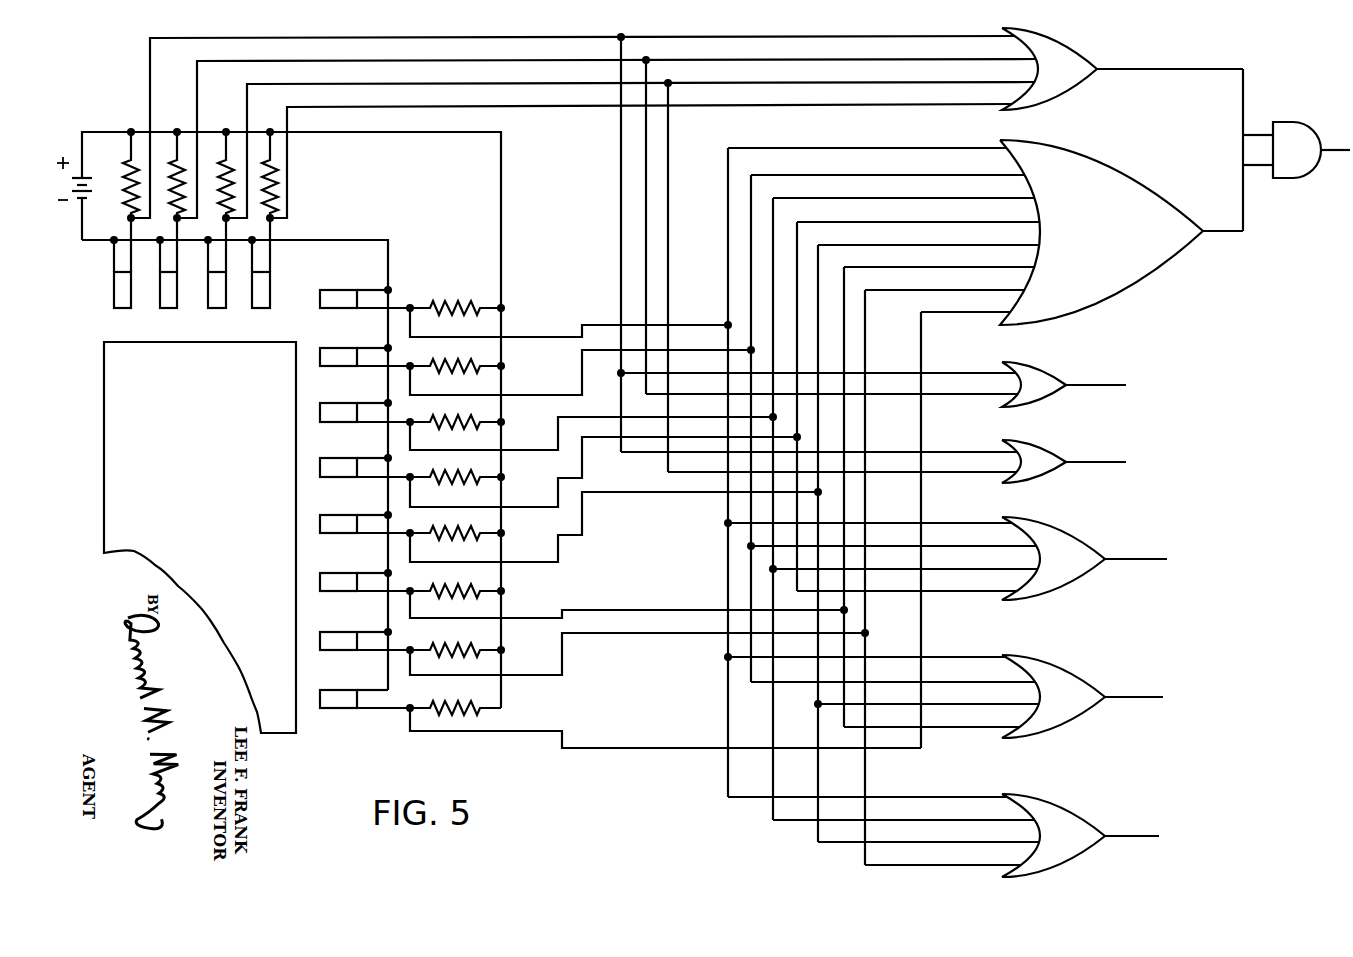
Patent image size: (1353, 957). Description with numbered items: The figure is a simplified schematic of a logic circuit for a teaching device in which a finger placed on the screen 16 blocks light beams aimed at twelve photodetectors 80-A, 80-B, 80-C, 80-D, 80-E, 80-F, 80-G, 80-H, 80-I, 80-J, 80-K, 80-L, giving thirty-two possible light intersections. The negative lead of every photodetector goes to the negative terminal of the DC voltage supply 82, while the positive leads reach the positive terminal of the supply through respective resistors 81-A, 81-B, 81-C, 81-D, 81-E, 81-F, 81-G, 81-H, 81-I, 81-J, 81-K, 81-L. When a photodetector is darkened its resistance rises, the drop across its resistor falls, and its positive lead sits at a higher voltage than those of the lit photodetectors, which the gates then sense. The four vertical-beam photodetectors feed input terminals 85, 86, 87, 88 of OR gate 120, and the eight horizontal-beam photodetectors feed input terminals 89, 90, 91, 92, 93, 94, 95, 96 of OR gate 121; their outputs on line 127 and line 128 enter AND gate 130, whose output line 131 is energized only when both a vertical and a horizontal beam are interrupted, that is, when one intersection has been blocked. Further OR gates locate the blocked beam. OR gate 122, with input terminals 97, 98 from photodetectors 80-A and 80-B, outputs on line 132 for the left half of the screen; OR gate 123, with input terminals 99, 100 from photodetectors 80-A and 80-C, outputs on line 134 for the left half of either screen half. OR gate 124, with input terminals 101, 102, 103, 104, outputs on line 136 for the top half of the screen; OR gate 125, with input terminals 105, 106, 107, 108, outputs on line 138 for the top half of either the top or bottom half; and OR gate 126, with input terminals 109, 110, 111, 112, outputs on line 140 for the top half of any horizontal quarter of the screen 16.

The screen 16 is at (195, 479).
The photodetector 80-A is at (125, 309).
The photodetector 80-B is at (171, 309).
The photodetector 80-C is at (219, 309).
The photodetector 80-D is at (263, 309).
The photodetector 80-E is at (345, 309).
The photodetector 80-F is at (345, 367).
The photodetector 80-G is at (345, 423).
The photodetector 80-H is at (345, 478).
The photodetector 80-I is at (345, 534).
The photodetector 80-J is at (345, 592).
The photodetector 80-K is at (345, 651).
The photodetector 80-L is at (345, 709).
The resistor 81-A is at (118, 172).
The resistor 81-B is at (160, 148).
The resistor 81-C is at (217, 160).
The resistor 81-D is at (267, 167).
The resistor 81-E is at (452, 310).
The resistor 81-F is at (452, 368).
The resistor 81-G is at (452, 424).
The resistor 81-H is at (452, 479).
The resistor 81-I is at (452, 535).
The resistor 81-J is at (452, 593).
The resistor 81-K is at (452, 652).
The resistor 81-L is at (452, 710).
The DC voltage supply 82 is at (277, 418).
The input terminal 85 is at (573, 231).
The input terminal 86 is at (606, 214).
The input terminal 87 is at (630, 265).
The input terminal 88 is at (641, 149).
The input terminal 89 is at (865, 462).
The input terminal 90 is at (886, 418).
The input terminal 91 is at (901, 499).
The input terminal 92 is at (918, 396).
The input terminal 93 is at (926, 533).
The input terminal 94 is at (939, 487).
The input terminal 95 is at (945, 567).
The input terminal 96 is at (965, 519).
The input terminal 97 is at (818, 361).
The input terminal 98 is at (832, 381).
The input terminal 99 is at (819, 440).
The input terminal 100 is at (842, 461).
The input terminal 101 is at (870, 512).
The input terminal 102 is at (894, 535).
The input terminal 103 is at (905, 558).
The input terminal 104 is at (907, 580).
The input terminal 105 is at (867, 647).
The input terminal 106 is at (893, 672).
The input terminal 107 is at (928, 694).
The input terminal 108 is at (932, 717).
The input terminal 109 is at (867, 787).
The input terminal 110 is at (904, 810).
The input terminal 111 is at (928, 832).
The input terminal 112 is at (943, 855).
The OR gate 120 is at (1043, 38).
The OR gate 121 is at (1093, 150).
The OR gate 122 is at (1026, 367).
The OR gate 123 is at (1026, 450).
The OR gate 124 is at (1045, 528).
The OR gate 125 is at (1058, 669).
The OR gate 126 is at (1056, 808).
The line 127 is at (1150, 69).
The line 128 is at (1217, 232).
The AND gate 130 is at (1297, 123).
The output line 131 is at (1331, 152).
The line 132 is at (1093, 385).
The line 134 is at (1090, 465).
The line 136 is at (1118, 558).
The line 138 is at (1125, 696).
The line 140 is at (1122, 836).